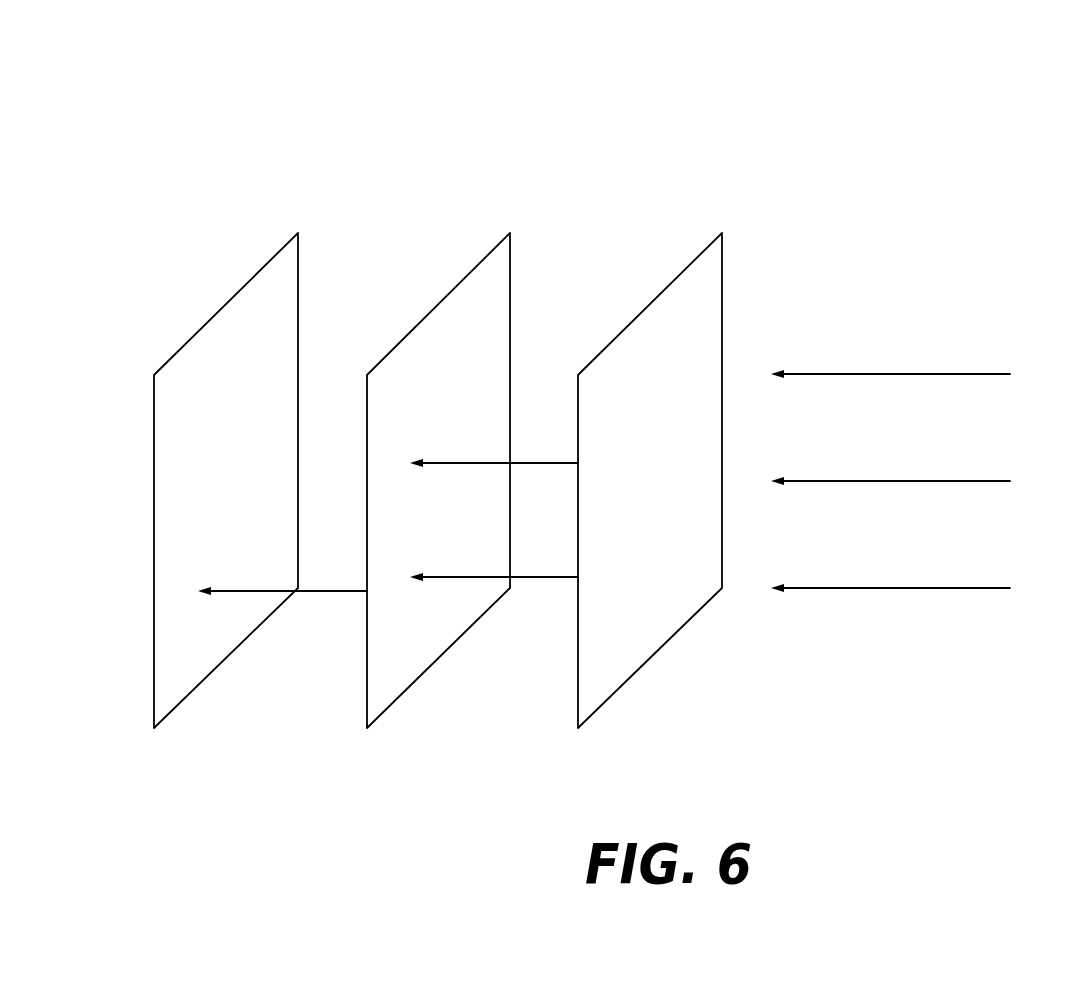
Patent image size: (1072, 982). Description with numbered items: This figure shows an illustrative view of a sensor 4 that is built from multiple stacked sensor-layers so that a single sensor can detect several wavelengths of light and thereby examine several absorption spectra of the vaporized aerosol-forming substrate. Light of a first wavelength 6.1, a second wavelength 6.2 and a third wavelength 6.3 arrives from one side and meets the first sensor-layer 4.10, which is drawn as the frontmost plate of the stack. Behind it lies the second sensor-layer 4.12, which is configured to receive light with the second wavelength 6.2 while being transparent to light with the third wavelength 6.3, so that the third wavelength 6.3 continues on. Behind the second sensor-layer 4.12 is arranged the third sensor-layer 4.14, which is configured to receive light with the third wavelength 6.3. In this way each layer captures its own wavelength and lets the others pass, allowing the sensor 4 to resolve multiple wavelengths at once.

The sensor 4 is at (533, 118).
The first sensor-layer 4.10 is at (688, 300).
The second sensor-layer 4.12 is at (475, 300).
The third sensor-layer 4.14 is at (250, 300).
The first wavelength 6.1 is at (986, 374).
The second wavelength 6.2 is at (986, 481).
The third wavelength 6.3 is at (986, 588).